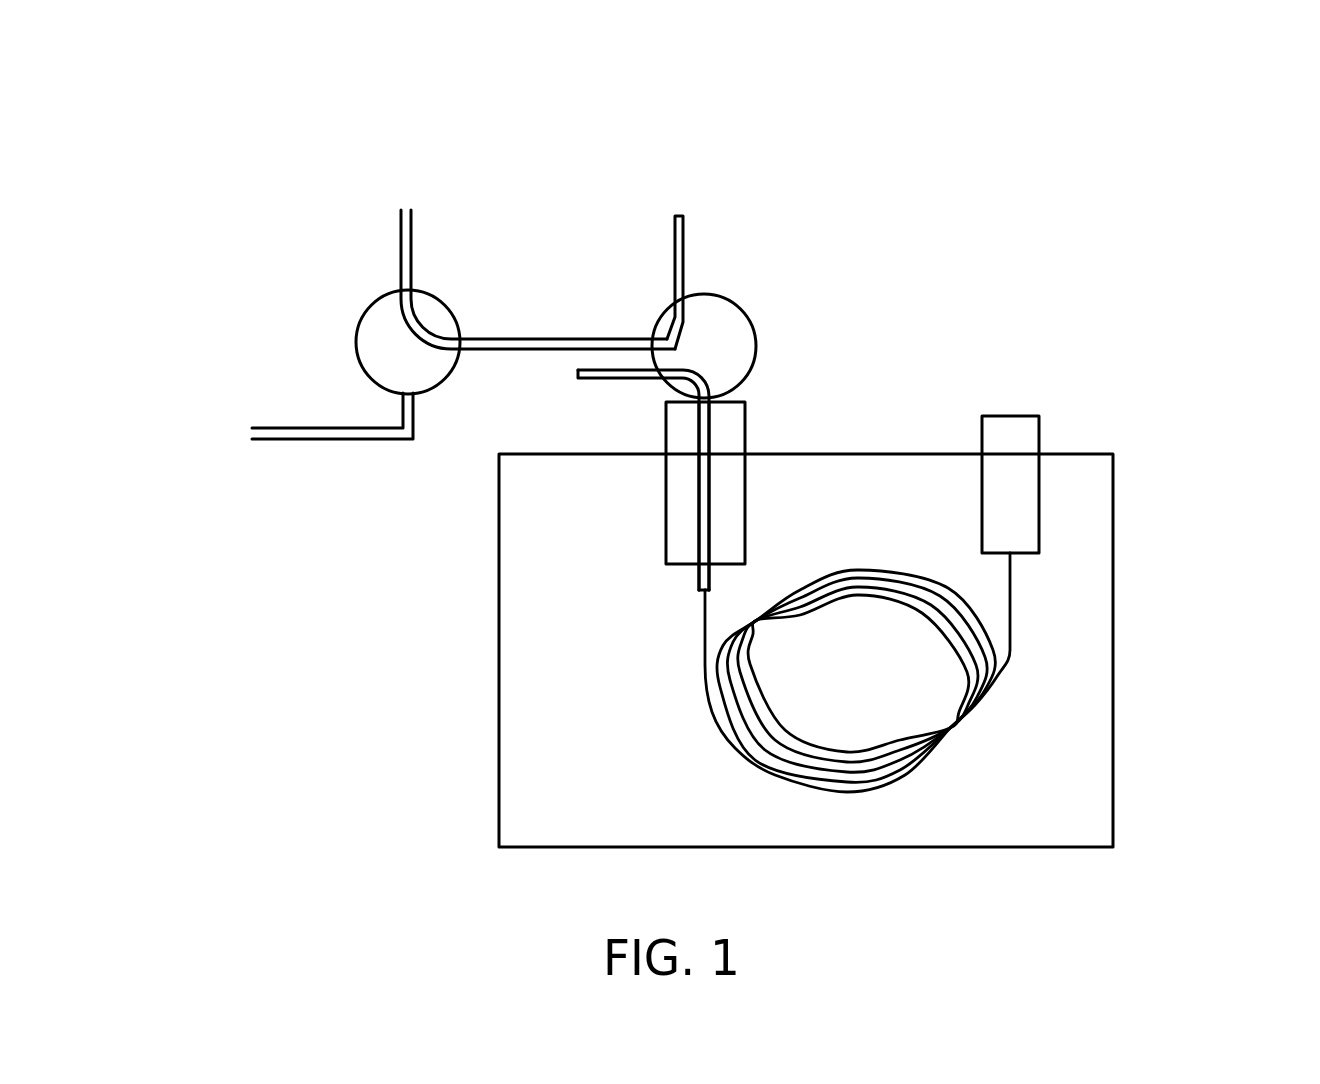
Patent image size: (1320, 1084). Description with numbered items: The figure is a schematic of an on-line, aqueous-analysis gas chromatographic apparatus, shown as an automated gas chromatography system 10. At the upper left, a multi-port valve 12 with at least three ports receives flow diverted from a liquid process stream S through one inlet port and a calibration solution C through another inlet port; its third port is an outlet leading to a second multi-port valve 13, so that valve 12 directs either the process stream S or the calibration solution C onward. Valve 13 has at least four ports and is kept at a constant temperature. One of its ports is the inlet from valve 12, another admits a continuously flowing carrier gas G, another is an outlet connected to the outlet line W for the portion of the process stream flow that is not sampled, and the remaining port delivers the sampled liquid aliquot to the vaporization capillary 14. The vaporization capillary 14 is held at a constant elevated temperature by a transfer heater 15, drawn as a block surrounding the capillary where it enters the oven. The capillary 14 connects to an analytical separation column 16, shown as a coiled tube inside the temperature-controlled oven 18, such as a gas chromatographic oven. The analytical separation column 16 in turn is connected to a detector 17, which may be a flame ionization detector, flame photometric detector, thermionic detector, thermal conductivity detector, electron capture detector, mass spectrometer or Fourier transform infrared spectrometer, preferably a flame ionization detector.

The automated gas chromatography system 10 is at (232, 601).
The multi-port valve 12 is at (358, 325).
The multi-port valve 13 is at (737, 306).
The vaporization capillary 14 is at (712, 442).
The transfer heater 15 is at (666, 507).
The analytical separation column 16 is at (763, 773).
The detector 17 is at (1038, 437).
The temperature-controlled oven 18 is at (1113, 510).
The liquid process stream S is at (403, 175).
The outlet line W is at (682, 188).
The carrier gas G is at (565, 374).
The calibration solution C is at (250, 432).